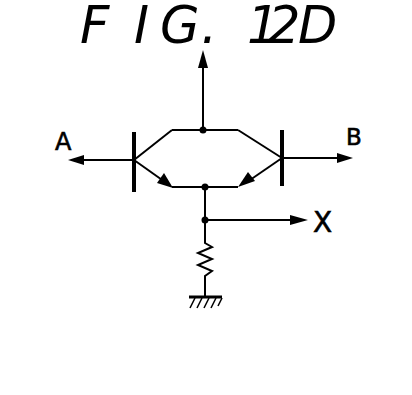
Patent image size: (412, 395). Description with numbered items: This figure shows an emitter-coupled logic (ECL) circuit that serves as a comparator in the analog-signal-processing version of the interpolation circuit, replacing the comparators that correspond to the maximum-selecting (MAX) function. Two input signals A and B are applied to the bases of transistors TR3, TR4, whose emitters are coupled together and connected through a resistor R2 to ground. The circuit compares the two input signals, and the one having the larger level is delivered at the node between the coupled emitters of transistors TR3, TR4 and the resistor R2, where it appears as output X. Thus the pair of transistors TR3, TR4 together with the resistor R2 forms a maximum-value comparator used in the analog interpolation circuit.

The transistor TR3 is at (119, 195).
The transistor TR4 is at (303, 130).
The resistor R2 is at (229, 259).